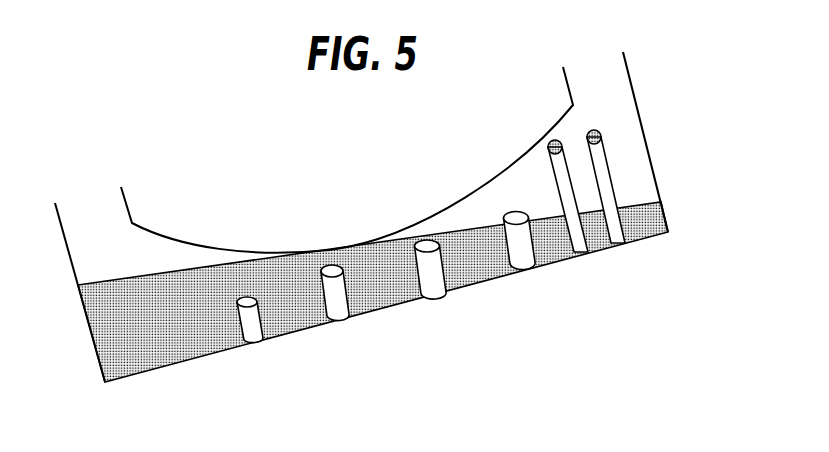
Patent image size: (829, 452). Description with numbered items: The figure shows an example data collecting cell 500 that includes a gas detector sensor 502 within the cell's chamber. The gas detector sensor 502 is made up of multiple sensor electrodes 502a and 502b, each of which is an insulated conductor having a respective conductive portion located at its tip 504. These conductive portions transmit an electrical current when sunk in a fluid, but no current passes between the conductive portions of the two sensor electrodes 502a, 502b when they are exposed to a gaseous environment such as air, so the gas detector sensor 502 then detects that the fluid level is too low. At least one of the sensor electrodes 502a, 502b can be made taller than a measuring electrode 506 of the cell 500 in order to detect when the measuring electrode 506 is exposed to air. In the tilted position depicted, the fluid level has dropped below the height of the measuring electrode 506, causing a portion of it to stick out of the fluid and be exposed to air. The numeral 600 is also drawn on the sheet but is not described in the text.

The data collecting cell 500 is at (146, 134).
The gas detector sensor 502 is at (622, 160).
The sensor electrode 502a is at (583, 250).
The sensor electrode 502b is at (623, 243).
The tips 504 is at (593, 130).
The measuring electrode 506 is at (523, 258).
The carrier substrate 600 is at (588, 450).